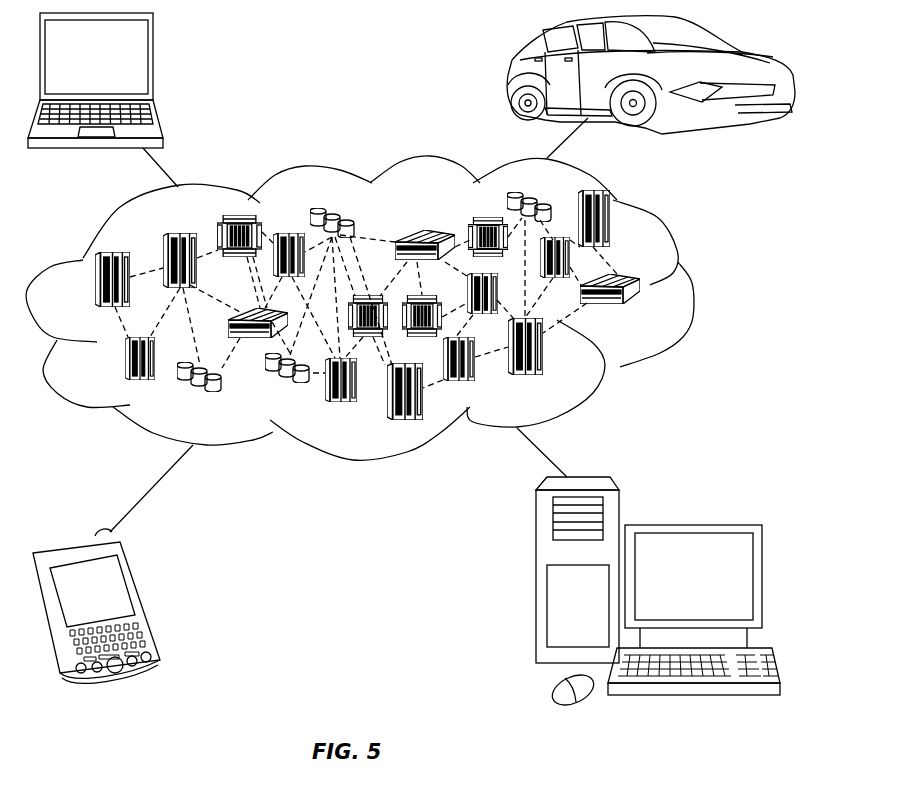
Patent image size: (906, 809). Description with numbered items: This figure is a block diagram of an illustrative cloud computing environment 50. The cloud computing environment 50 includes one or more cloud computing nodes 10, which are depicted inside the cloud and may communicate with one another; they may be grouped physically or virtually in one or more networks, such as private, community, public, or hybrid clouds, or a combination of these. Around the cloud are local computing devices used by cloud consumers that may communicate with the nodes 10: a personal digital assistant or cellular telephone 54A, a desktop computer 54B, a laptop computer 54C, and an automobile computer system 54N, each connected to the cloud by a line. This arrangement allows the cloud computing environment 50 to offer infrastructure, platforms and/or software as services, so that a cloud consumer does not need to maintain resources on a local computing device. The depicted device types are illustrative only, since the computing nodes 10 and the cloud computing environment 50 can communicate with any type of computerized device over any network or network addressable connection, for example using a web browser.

The cloud computing environment 50 is at (692, 283).
The cloud computing node 10 is at (647, 314).
The personal digital assistant (PDA) or cellular telephone 54A is at (145, 602).
The desktop computer 54B is at (692, 525).
The laptop computer 54C is at (153, 62).
The automobile computer system 54N is at (512, 78).